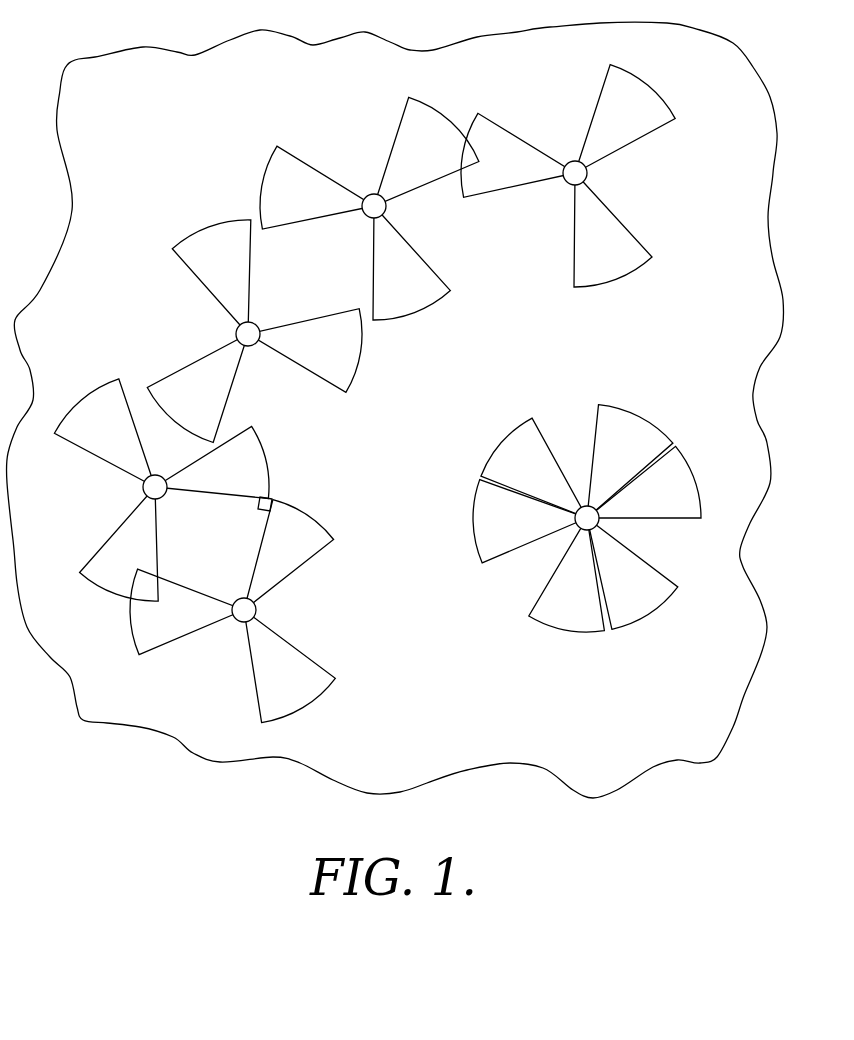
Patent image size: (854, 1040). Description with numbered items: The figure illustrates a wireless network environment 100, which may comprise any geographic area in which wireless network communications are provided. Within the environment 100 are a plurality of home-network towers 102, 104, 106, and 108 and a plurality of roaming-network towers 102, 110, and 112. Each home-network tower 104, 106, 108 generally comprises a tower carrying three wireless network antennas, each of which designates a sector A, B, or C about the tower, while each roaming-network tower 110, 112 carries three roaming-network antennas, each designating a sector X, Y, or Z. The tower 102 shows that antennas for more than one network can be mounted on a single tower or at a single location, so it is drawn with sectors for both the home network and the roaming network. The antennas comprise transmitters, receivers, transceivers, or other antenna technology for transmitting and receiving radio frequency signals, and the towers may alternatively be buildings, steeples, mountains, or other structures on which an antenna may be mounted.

The wireless network environment 100 is at (518, 32).
The home-network and roaming-network tower 102 is at (598, 524).
The home-network tower 104 is at (587, 174).
The home-network tower 106 is at (256, 324).
The home-network tower 108 is at (256, 611).
The roaming-network tower 110 is at (374, 194).
The roaming-network tower 112 is at (163, 497).